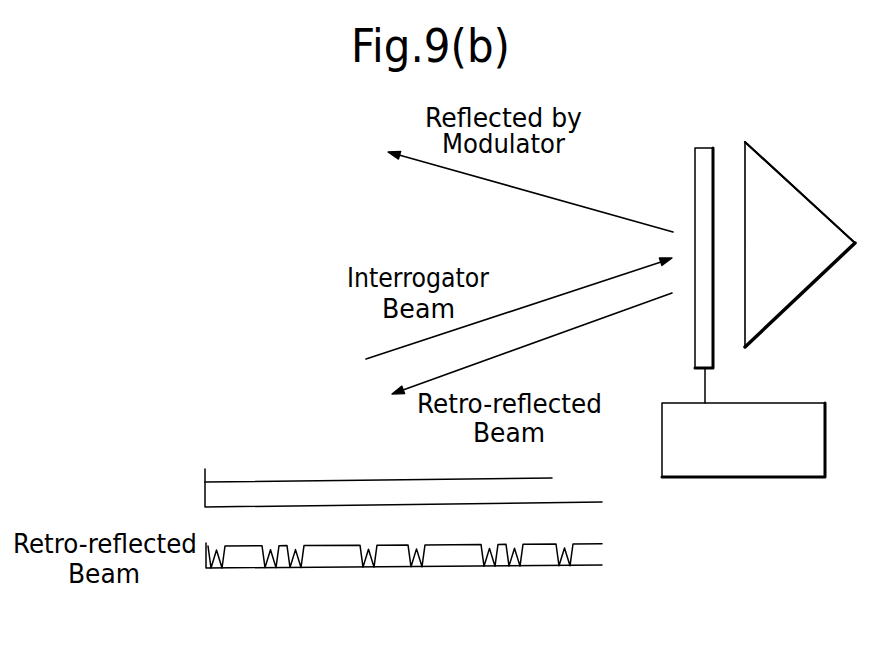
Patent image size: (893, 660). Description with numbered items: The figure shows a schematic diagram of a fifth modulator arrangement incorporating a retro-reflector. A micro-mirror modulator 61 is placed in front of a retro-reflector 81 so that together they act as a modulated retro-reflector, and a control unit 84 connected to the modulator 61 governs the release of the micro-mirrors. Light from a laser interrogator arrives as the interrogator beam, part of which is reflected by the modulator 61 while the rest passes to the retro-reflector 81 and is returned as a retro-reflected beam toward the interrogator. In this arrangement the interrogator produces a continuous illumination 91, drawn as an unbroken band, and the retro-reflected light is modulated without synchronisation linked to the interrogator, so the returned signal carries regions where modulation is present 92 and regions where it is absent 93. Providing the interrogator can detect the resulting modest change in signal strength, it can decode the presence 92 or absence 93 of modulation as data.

The modulator 61 is at (703, 178).
The retro-reflector 81 is at (793, 212).
The control unit 84 is at (753, 450).
The continuous illumination 91 is at (235, 482).
The presence of modulation 92 is at (215, 570).
The absence of modulation 93 is at (322, 547).